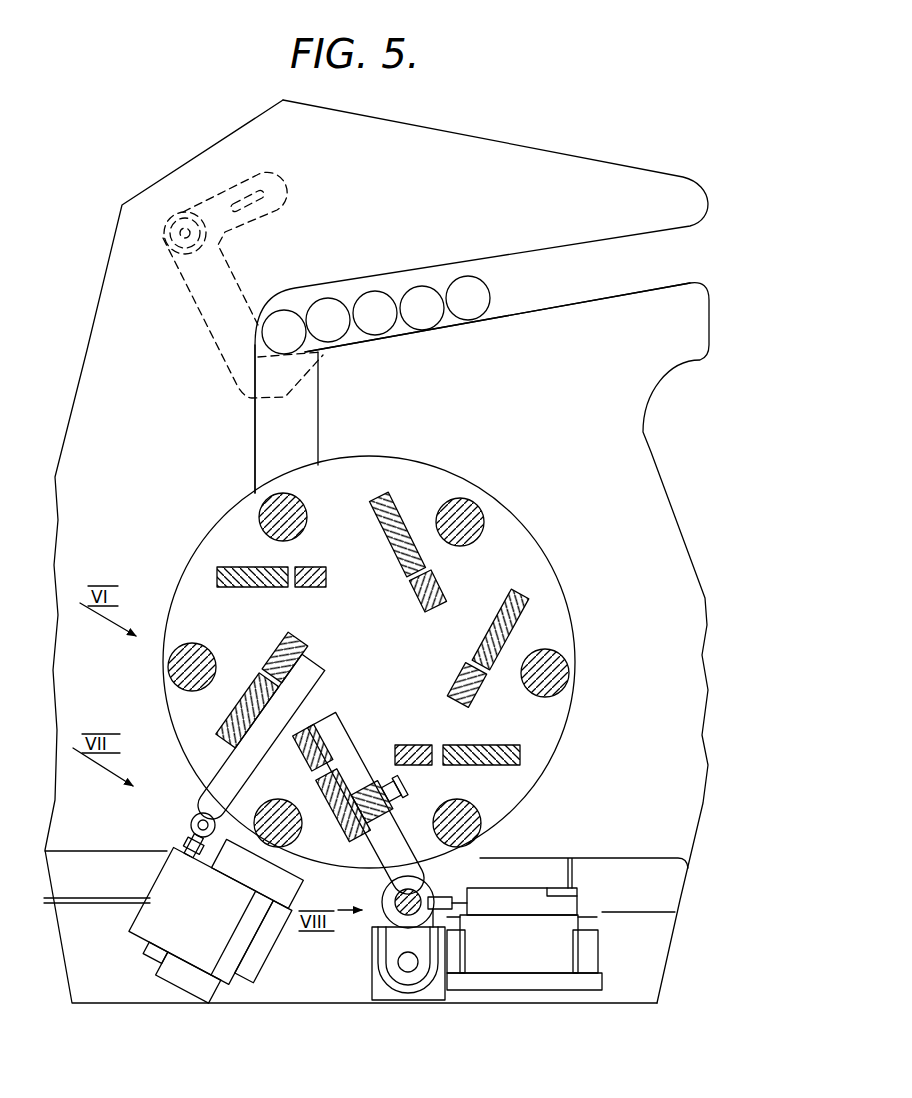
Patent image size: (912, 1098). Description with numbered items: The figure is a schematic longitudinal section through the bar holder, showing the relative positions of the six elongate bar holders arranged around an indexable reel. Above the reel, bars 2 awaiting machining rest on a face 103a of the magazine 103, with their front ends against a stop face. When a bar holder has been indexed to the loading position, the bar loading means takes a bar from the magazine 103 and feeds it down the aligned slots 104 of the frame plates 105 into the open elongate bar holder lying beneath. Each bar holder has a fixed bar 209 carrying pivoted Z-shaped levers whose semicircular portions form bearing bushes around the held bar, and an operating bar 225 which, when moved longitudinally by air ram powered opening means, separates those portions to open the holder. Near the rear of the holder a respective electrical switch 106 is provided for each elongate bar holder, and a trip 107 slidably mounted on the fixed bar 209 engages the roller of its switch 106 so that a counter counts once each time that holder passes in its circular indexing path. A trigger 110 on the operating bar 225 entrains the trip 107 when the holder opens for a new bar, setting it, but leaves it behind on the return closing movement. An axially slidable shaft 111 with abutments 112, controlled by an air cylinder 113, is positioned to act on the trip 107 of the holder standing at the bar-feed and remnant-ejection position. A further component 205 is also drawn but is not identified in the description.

The bar 2 is at (322, 310).
The magazine 103 is at (642, 273).
The face of the magazine 103a is at (509, 313).
The slot 104 is at (302, 431).
The frame plate 105 is at (622, 446).
The electrical switch 106 is at (177, 865).
The trip 107 is at (213, 797).
The trigger 110 is at (275, 707).
The axially slidable shaft 111 is at (397, 898).
The abutment 112 is at (384, 908).
The air cylinder 113 is at (378, 990).
The clamp 205 is at (368, 818).
The fixed bar 209 is at (250, 576).
The operating bar 225 is at (322, 577).